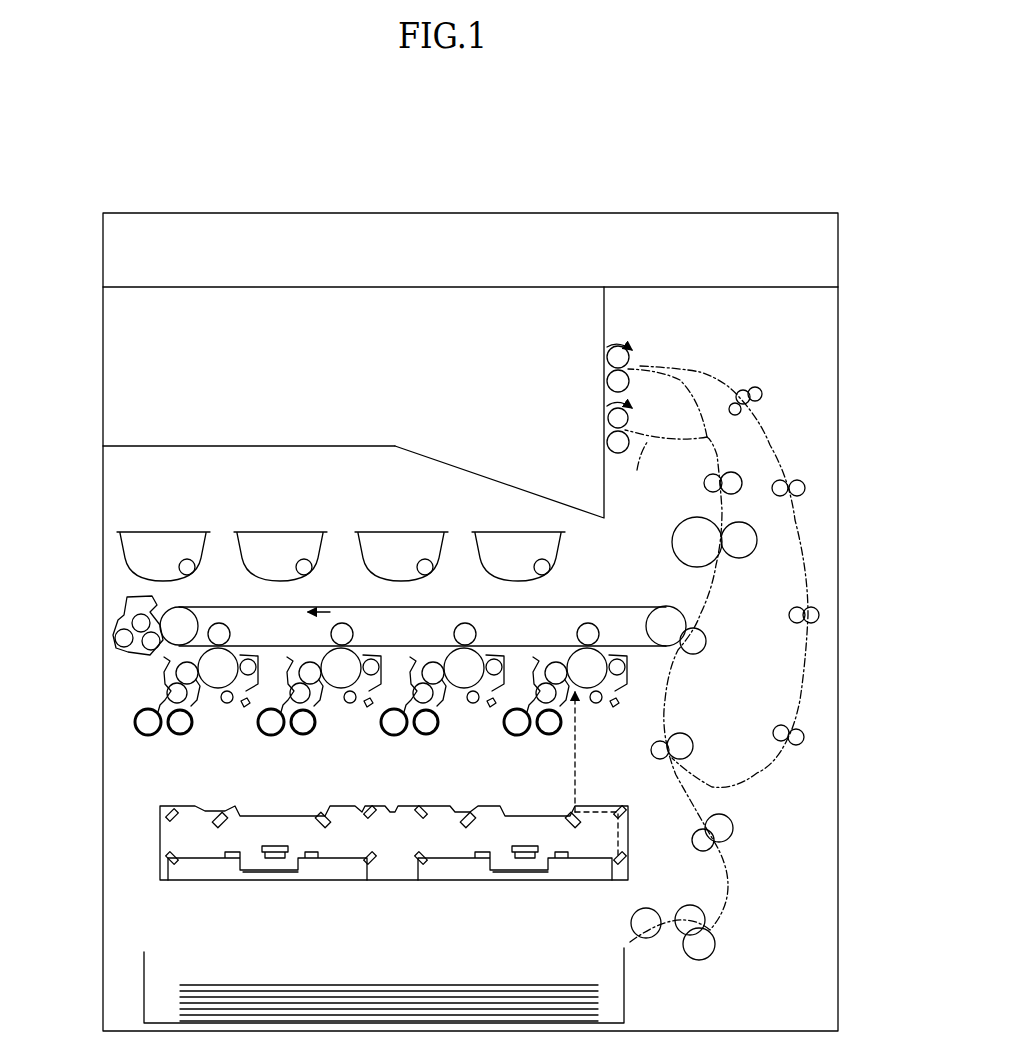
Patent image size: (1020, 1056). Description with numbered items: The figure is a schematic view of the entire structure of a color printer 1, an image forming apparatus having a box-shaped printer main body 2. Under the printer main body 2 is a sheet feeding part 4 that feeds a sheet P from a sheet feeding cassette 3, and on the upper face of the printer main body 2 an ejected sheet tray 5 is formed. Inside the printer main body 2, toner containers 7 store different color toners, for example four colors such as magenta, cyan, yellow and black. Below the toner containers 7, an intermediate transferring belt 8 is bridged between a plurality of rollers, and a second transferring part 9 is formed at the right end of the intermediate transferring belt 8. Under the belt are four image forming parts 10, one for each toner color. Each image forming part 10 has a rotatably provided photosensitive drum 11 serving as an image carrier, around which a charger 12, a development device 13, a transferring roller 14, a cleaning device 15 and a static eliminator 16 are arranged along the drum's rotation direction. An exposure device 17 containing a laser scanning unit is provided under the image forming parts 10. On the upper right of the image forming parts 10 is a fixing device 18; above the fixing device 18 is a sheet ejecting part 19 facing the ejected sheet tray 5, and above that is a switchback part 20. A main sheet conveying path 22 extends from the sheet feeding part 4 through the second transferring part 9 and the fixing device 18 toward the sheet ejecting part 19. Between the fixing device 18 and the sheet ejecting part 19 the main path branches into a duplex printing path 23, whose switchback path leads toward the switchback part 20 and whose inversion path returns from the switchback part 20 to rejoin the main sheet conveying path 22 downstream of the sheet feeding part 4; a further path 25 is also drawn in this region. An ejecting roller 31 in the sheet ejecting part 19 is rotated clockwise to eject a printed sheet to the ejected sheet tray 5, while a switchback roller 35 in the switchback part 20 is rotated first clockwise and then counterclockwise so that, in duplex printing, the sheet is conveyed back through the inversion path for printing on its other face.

The color printer 1 is at (557, 175).
The printer main body 2 is at (98, 505).
The sheet feeding cassette 3 is at (144, 988).
The sheet feeding part 4 is at (714, 938).
The ejected sheet tray 5 is at (482, 474).
The toner container 7 is at (252, 520).
The intermediate transferring belt 8 is at (597, 604).
The second transferring part 9 is at (697, 624).
The image forming part 10 is at (209, 733).
The photosensitive drum 11 is at (587, 690).
The charger 12 is at (600, 710).
The development device 13 is at (558, 740).
The transferring roller 14 is at (576, 637).
The cleaning device 15 is at (622, 670).
The static eliminator 16 is at (618, 701).
The exposure device 17 is at (160, 832).
The fixing device 18 is at (715, 511).
The sheet ejecting part 19 is at (598, 430).
The switchback part 20 is at (598, 363).
The main sheet conveying path 22 is at (718, 592).
The duplex printing path 23 is at (690, 397).
The discharge path 25 is at (633, 469).
The ejecting roller 31 is at (630, 402).
The switchback roller 35 is at (632, 354).
The sheet P is at (418, 984).